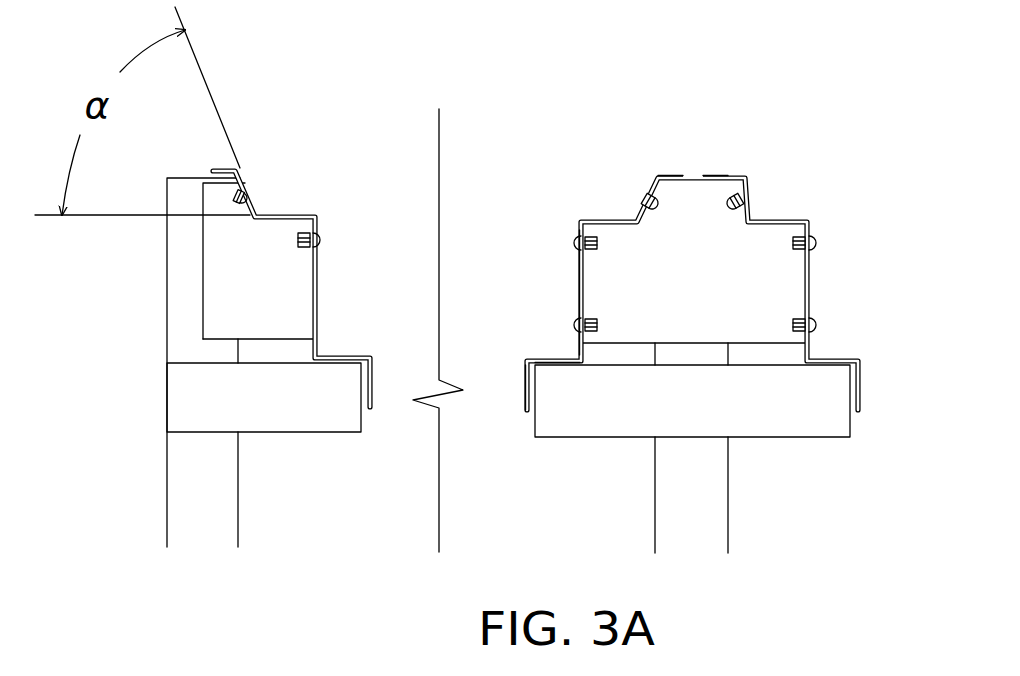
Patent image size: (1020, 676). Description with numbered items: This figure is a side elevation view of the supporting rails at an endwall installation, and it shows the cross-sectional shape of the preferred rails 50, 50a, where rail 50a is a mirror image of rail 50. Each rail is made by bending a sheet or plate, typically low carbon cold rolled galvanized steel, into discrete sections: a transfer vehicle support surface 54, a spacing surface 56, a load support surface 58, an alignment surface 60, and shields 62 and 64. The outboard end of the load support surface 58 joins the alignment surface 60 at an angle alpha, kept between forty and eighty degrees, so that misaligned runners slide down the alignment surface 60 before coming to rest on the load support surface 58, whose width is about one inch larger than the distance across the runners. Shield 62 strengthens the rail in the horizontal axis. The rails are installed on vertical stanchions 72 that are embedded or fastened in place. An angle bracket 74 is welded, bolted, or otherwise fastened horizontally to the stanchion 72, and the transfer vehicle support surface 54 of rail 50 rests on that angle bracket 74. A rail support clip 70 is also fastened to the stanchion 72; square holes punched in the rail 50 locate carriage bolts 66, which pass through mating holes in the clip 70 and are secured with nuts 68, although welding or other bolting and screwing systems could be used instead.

The rail 50 is at (620, 197).
The rail 50a is at (277, 152).
The transfer vehicle support surface 54 is at (555, 357).
The spacing surface 56 is at (578, 288).
The load support surface 58 is at (287, 213).
The alignment surface 60 is at (648, 183).
The shield 62 is at (672, 175).
The shield 64 is at (525, 387).
The carriage bolt 66 is at (743, 203).
The nut 68 is at (733, 210).
The rail support clip 70 is at (770, 273).
The vertical stanchion 72 is at (698, 505).
The angle bracket 74 is at (800, 420).